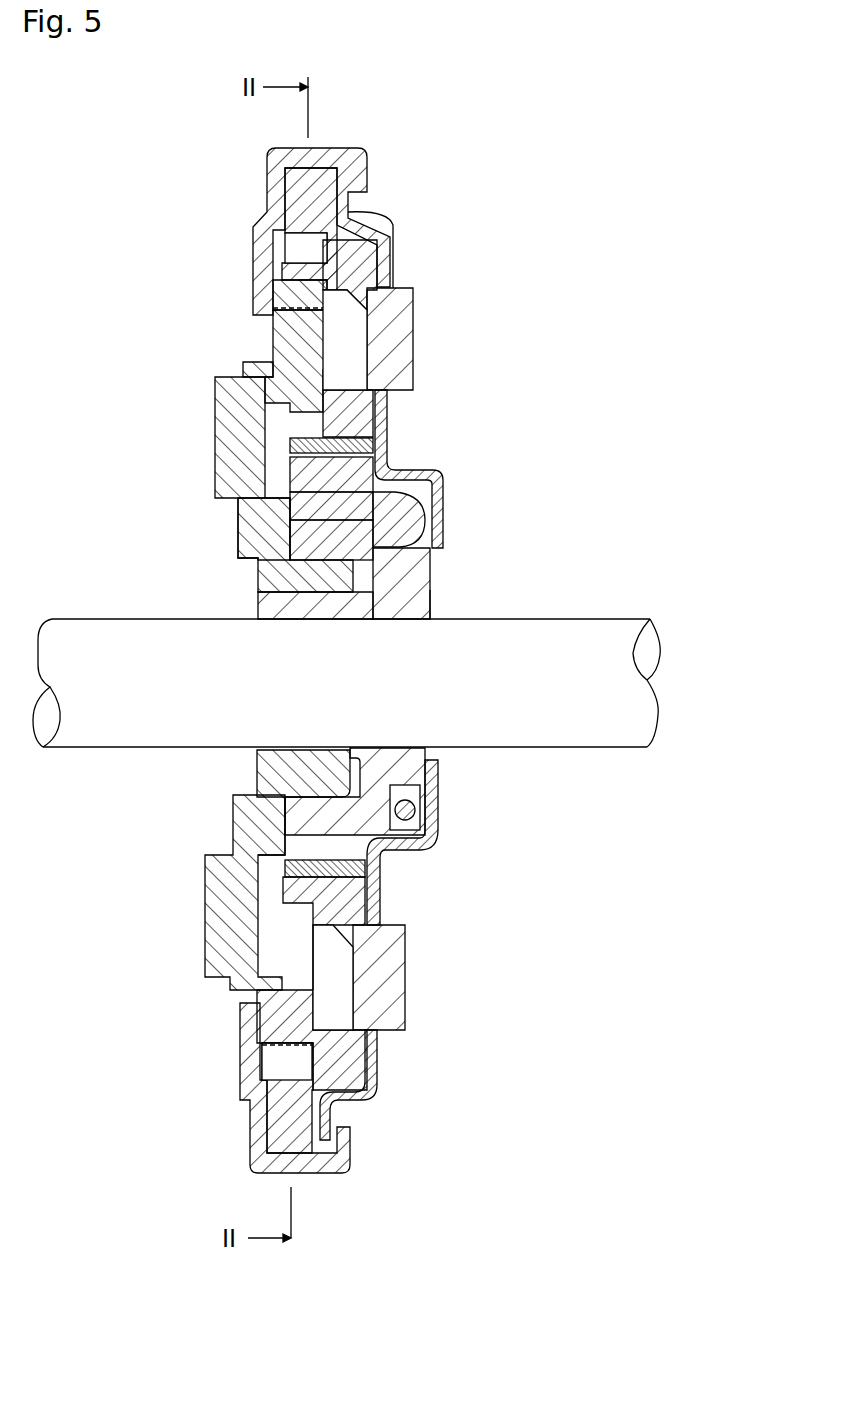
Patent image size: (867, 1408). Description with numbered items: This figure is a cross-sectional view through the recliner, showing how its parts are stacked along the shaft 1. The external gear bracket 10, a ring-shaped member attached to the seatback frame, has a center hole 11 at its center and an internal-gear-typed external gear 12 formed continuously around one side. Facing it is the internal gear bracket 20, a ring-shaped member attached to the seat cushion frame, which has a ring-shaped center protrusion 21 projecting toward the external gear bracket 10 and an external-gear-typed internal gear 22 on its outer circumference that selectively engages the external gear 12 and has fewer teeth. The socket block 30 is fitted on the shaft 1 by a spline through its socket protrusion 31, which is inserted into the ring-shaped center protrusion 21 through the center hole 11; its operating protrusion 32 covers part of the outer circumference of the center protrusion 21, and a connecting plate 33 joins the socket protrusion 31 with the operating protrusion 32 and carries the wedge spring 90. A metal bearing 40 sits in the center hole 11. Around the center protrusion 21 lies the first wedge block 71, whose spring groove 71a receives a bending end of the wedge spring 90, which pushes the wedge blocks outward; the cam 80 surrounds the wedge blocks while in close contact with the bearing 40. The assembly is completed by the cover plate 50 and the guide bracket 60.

The shaft 1 is at (627, 617).
The external gear bracket 10 is at (413, 330).
The center hole 11 is at (380, 878).
The external gear 12 is at (290, 245).
The internal gear bracket 20 is at (215, 428).
The ring-shaped center protrusion 21 is at (301, 777).
The internal gear 22 is at (300, 300).
The socket block 30 is at (445, 575).
The socket protrusion 31 is at (262, 600).
The operating protrusion 32 is at (287, 817).
The connecting plate 33 is at (432, 597).
The bearing 40 is at (375, 440).
The cover plate 50 is at (445, 476).
The guide bracket 60 is at (267, 178).
The first wedge block 71 is at (283, 543).
The spring groove 71a is at (238, 515).
The cam 80 is at (300, 478).
The wedge spring 90 is at (425, 521).